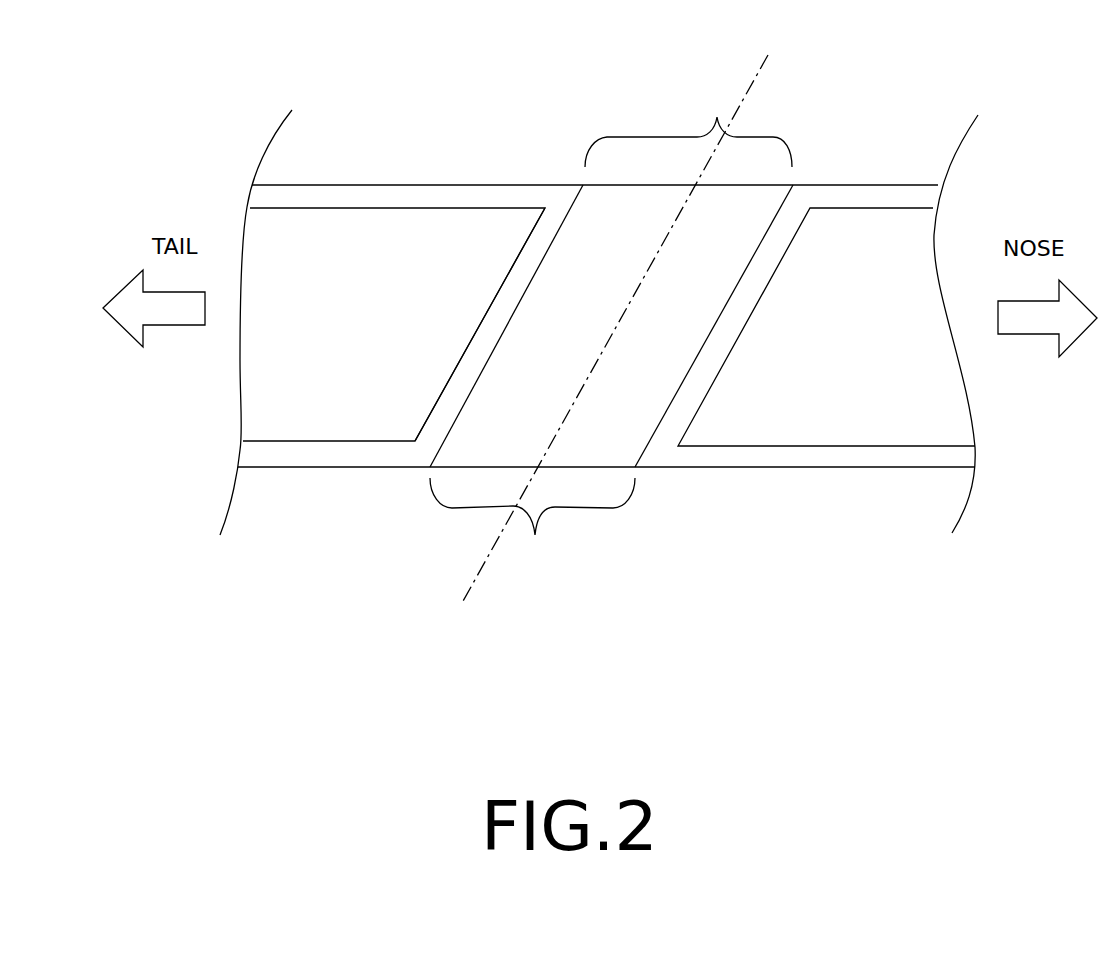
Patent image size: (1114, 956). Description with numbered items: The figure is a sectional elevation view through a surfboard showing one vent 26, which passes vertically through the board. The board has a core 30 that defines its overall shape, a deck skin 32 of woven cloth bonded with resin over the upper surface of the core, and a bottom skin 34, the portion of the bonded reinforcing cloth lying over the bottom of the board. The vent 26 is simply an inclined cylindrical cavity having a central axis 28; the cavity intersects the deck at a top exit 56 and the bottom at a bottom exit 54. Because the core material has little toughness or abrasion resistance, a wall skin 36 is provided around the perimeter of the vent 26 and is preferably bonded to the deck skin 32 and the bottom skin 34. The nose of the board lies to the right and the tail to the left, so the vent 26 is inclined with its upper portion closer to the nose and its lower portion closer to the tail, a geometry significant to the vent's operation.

The vent 26 is at (611, 253).
The central axis 28 is at (670, 321).
The core 30 is at (916, 508).
The deck skin 32 is at (624, 243).
The bottom skin 34 is at (578, 534).
The wall skin 36 is at (403, 240).
The bottom exit 54 is at (532, 547).
The top exit 56 is at (688, 103).